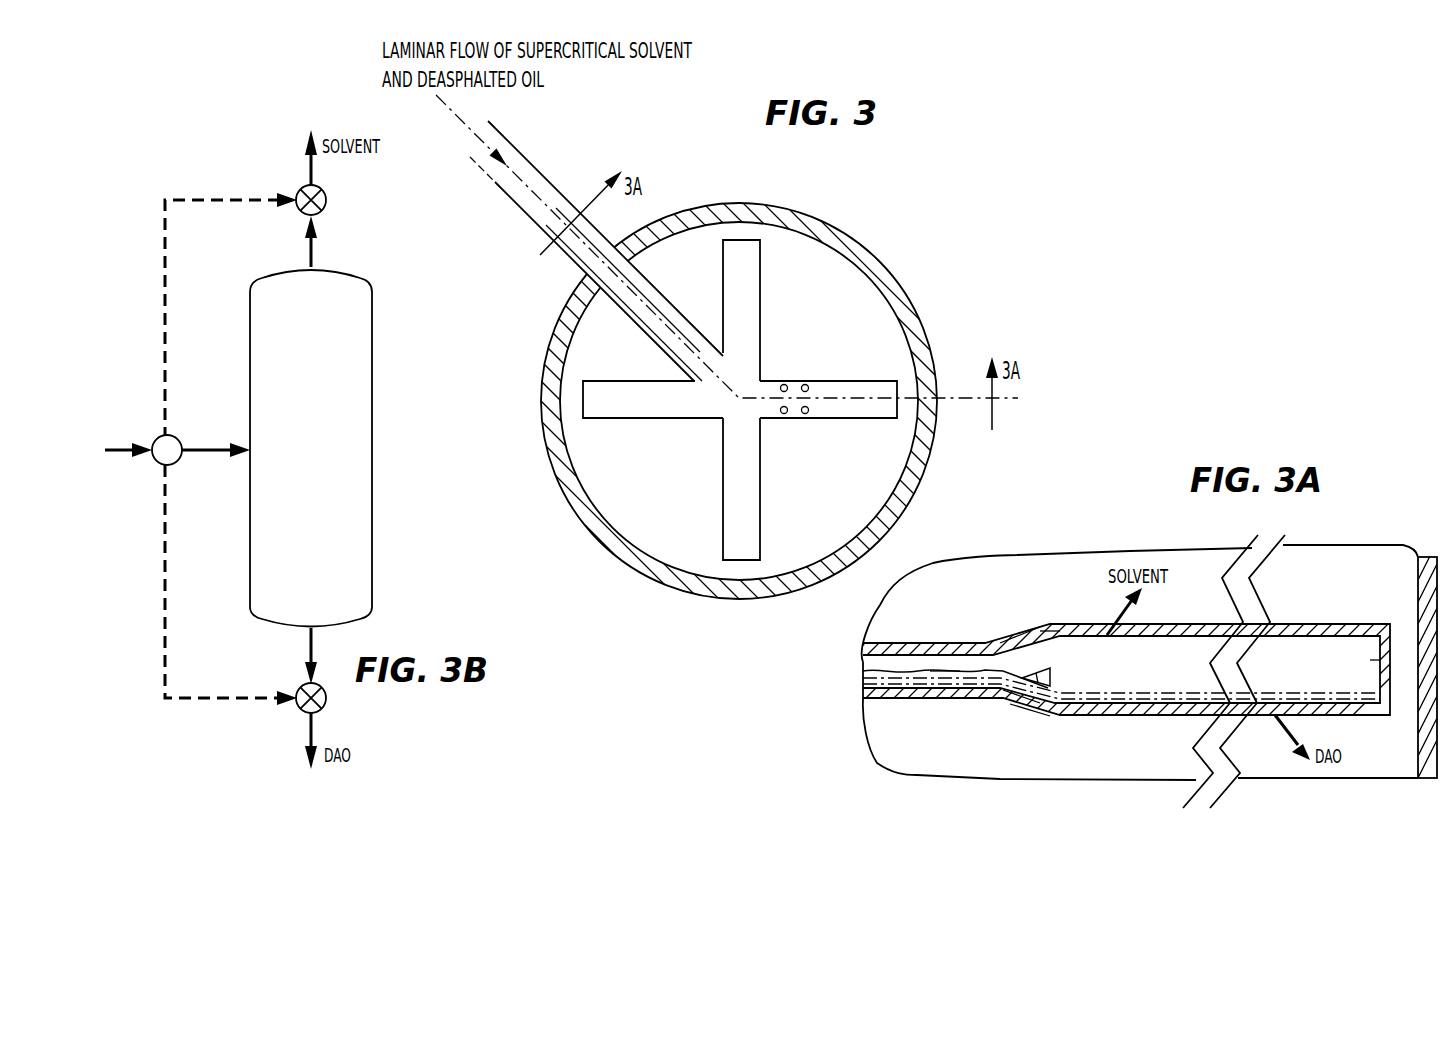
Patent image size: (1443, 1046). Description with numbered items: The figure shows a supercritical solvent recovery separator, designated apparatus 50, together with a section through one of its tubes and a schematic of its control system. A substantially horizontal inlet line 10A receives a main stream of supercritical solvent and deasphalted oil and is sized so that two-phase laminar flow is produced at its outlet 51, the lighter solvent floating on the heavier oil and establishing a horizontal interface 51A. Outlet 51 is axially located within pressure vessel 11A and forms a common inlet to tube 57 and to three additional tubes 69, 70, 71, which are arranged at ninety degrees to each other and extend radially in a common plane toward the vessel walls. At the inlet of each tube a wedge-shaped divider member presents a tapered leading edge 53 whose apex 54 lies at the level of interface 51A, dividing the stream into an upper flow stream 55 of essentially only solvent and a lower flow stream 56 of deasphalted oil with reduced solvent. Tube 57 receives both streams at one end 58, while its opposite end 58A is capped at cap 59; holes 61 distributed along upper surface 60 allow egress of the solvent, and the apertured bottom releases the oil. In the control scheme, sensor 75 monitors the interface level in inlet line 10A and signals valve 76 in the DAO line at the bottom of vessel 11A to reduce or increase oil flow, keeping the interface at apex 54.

In FIG. 3, the apparatus 50 is at (805, 354).
In FIG. 3, the inlet line 10A is at (525, 212).
In FIG. 3B, the inlet line 10A is at (216, 446).
In FIG. 3A, the inlet line 10A is at (882, 698).
In FIG. 3, the pressure vessel 11A is at (916, 296).
In FIG. 3B, the pressure vessel 11A is at (373, 404).
In FIG. 3A, the pressure vessel 11A is at (1413, 779).
In FIG. 3, the outlet 51 is at (692, 371).
In FIG. 3A, the outlet 51 is at (1121, 681).
In FIG. 3A, the interface 51A is at (950, 671).
In FIG. 3A, the tapered leading edge 53 is at (1052, 676).
In FIG. 3A, the apex 54 is at (1022, 676).
In FIG. 3A, the upper flow stream 55 is at (1048, 650).
In FIG. 3A, the lower flow stream 56 is at (1015, 705).
In FIG. 3, the tube 57 is at (832, 419).
In FIG. 3A, the tube 57 is at (1127, 716).
In FIG. 3A, the one end 58 is at (1025, 712).
In FIG. 3A, the opposite end 58A is at (1365, 715).
In FIG. 3A, the cap 59 is at (1380, 672).
In FIG. 3A, the upper surface 60 is at (1191, 624).
In FIG. 3, the holes 61 is at (787, 384).
In FIG. 3, the tube 69 is at (760, 522).
In FIG. 3, the tube 70 is at (643, 419).
In FIG. 3, the tube 71 is at (760, 308).
In FIG. 3B, the sensor 75 is at (153, 440).
In FIG. 3B, the valve 76 is at (299, 712).